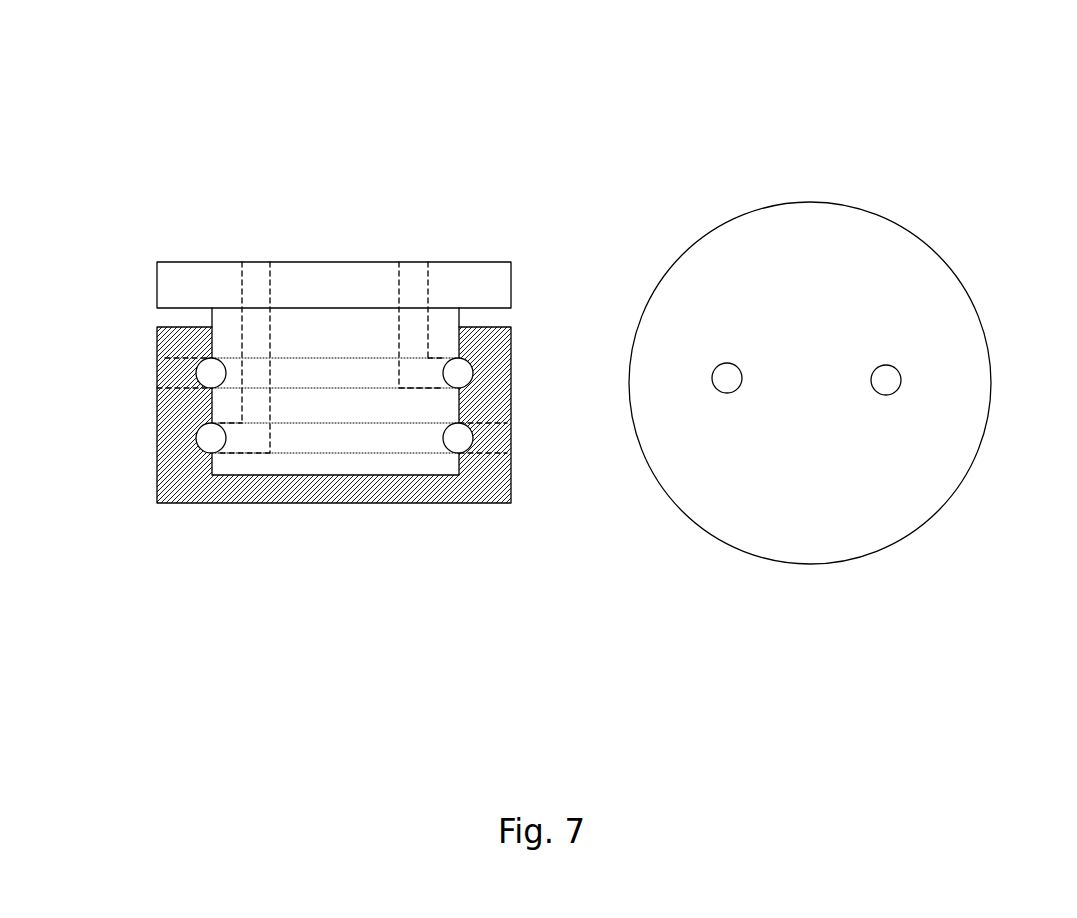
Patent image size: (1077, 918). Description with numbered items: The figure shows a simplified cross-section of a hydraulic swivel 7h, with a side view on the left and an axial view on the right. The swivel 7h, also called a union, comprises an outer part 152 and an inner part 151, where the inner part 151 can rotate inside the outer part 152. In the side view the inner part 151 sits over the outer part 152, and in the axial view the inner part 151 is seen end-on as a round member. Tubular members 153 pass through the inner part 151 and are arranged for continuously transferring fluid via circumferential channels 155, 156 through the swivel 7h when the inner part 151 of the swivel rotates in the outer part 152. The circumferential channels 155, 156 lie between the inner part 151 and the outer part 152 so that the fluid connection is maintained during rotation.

The hydraulic swivel 7h is at (460, 233).
The inner part 151 is at (357, 292).
The outer part 152 is at (157, 397).
The tubular members 153 is at (408, 260).
The circumferential channel 155 is at (188, 368).
The circumferential channel 156 is at (187, 432).